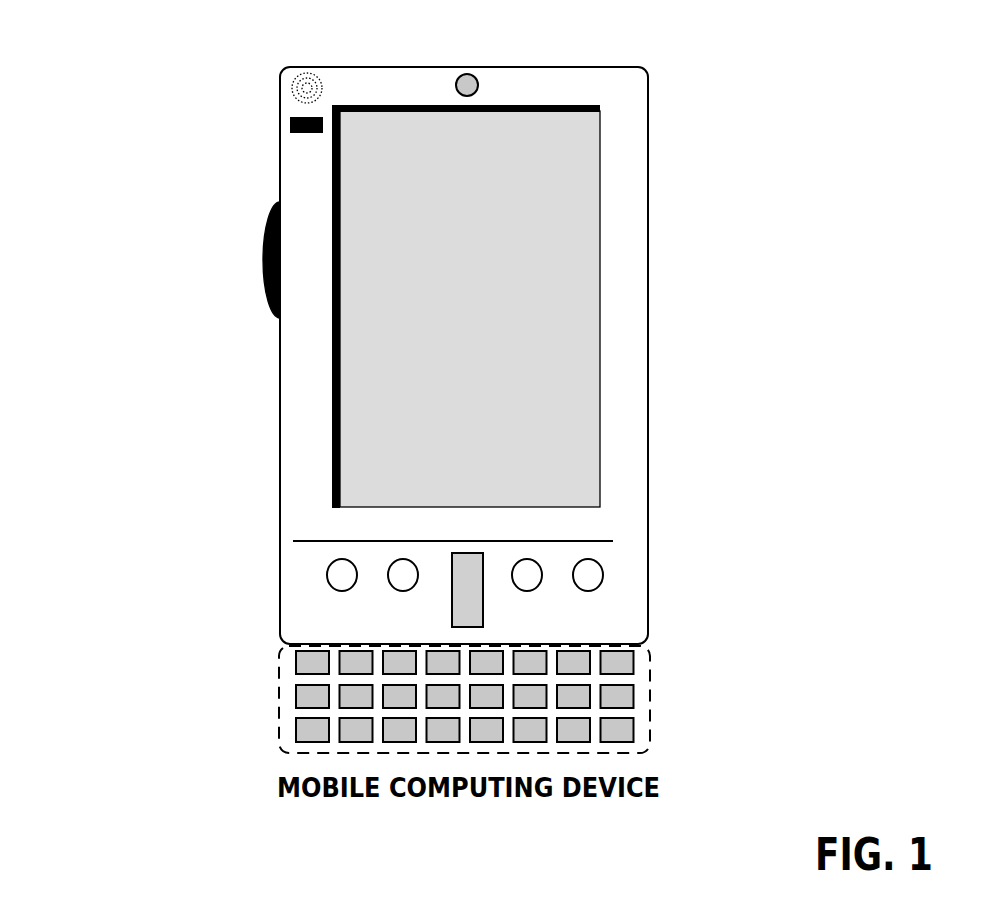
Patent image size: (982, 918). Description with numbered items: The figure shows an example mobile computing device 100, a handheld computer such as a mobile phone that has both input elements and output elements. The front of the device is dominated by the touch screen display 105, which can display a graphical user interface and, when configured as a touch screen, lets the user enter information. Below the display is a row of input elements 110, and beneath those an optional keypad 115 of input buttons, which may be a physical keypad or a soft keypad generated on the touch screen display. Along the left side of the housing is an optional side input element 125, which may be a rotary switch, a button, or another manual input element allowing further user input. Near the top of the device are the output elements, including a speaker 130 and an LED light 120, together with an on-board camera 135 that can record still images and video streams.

The mobile computing device 100 is at (650, 80).
The touch screen display 105 is at (355, 450).
The input buttons 110 is at (588, 588).
The input buttons 115 is at (278, 725).
The LED light 120 is at (290, 117).
The side input element 125 is at (262, 268).
The speaker 130 is at (308, 80).
The on-board camera 135 is at (475, 77).